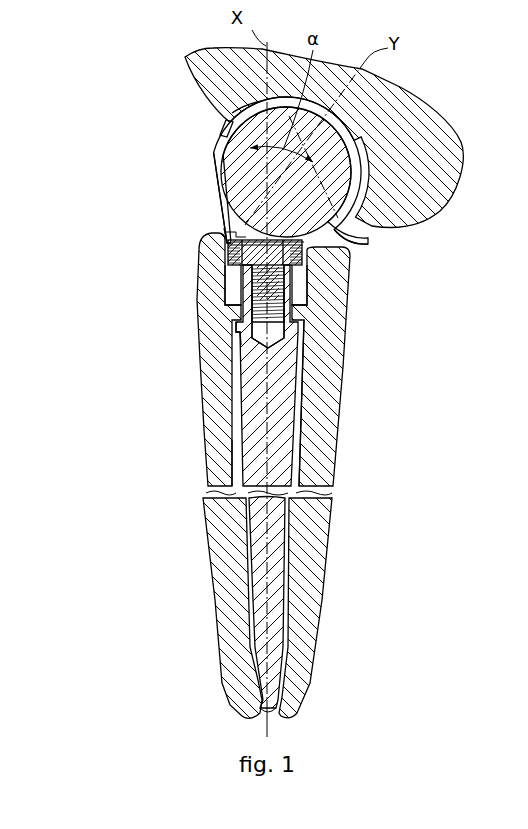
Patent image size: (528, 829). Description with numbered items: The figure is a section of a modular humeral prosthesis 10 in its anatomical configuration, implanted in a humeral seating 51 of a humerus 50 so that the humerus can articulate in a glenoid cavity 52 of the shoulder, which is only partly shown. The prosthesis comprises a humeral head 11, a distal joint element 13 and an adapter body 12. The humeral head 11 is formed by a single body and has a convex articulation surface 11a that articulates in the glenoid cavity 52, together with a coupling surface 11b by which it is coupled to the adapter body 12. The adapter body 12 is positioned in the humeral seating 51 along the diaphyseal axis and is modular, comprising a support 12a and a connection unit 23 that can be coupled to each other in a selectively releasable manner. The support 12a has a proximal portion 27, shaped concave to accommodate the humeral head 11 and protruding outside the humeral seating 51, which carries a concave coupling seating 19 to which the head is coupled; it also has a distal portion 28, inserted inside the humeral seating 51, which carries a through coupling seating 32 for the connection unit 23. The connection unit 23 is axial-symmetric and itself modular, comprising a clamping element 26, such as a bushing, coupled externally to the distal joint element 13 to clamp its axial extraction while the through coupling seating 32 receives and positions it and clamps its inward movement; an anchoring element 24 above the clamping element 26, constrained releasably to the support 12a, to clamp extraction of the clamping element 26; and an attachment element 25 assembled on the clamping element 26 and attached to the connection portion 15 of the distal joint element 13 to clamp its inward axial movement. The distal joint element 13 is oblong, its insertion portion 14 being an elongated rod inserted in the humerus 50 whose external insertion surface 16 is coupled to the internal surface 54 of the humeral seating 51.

The modular humeral prosthesis 10 is at (238, 394).
The humeral head 11 is at (238, 124).
The convex articulation surface 11a is at (232, 100).
The coupling surface 11b is at (219, 138).
The adapter body 12 is at (355, 240).
The support 12a is at (224, 232).
The coupling seating 19 is at (216, 180).
The proximal portion 27 is at (357, 228).
The anchoring element 24 is at (233, 248).
The attachment element 25 is at (246, 258).
The connection unit 23 is at (222, 301).
The clamping element 26 is at (226, 300).
The distal portion 28 is at (307, 274).
The through coupling seating 32 is at (306, 312).
The connection portion 15 is at (238, 324).
The insertion portion 14 is at (236, 417).
The external insertion surface 16 is at (238, 462).
The humeral seating 51 is at (303, 322).
The internal surface 54 is at (304, 409).
The distal joint element 13 is at (298, 439).
The humerus 50 is at (277, 475).
The glenoid cavity 52 is at (362, 198).